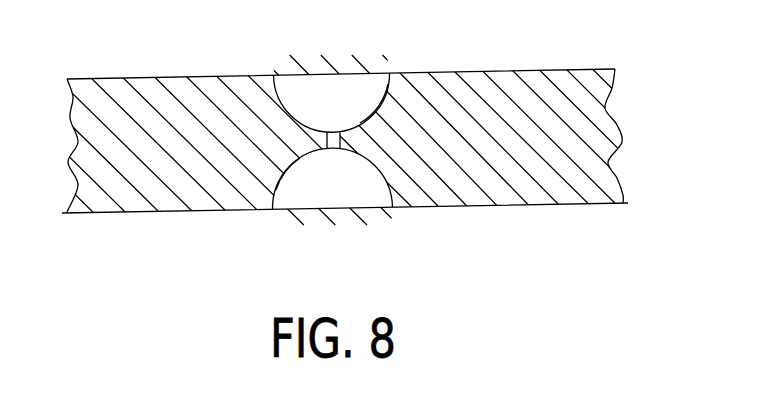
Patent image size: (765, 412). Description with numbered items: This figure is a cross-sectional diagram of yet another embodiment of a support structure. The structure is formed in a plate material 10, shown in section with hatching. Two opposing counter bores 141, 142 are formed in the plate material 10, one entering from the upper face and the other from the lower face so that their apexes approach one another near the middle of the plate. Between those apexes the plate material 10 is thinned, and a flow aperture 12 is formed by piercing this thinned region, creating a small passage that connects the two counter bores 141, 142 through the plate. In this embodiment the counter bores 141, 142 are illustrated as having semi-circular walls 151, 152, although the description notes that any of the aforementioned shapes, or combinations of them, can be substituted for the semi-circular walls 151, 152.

The plate material 10 is at (523, 70).
The flow aperture 12 is at (334, 131).
The counter bore 141 is at (362, 196).
The counter bore 142 is at (216, 18).
The semi-circular wall 151 is at (295, 207).
The semi-circular wall 152 is at (376, 94).